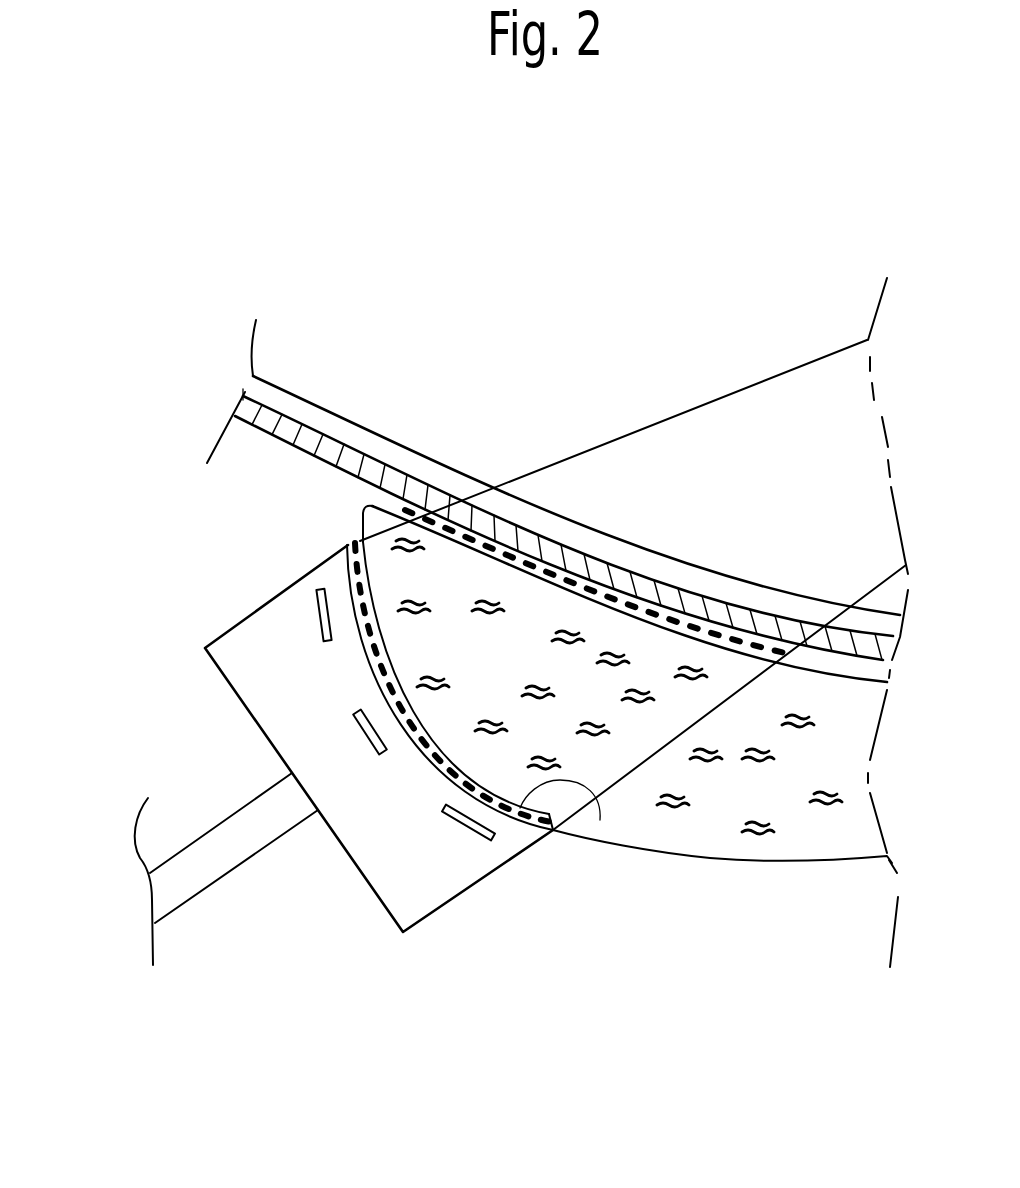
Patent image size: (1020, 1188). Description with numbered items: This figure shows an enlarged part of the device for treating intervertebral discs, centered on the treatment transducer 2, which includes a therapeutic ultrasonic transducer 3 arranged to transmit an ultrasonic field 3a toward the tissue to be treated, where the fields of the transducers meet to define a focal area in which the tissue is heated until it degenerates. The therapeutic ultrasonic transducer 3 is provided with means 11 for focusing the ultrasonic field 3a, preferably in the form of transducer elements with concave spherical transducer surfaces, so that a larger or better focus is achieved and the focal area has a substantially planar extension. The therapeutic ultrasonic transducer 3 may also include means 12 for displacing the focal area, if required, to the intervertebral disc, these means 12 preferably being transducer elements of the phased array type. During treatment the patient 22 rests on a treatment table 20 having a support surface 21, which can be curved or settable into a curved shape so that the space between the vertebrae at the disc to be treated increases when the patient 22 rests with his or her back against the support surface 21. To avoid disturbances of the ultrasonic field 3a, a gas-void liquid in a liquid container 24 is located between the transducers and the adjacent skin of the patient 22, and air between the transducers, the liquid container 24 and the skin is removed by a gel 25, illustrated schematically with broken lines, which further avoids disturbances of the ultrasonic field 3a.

The treatment transducer 2 is at (213, 564).
The therapeutic ultrasonic transducer 3 is at (257, 697).
The ultrasonic field 3a is at (640, 427).
The means for focusing 11 is at (600, 820).
The means for displacing the focal area 12 is at (463, 830).
The treatment table 20 is at (283, 480).
The support surface 21 is at (314, 455).
The patient 22 is at (292, 393).
The liquid container 24 is at (703, 852).
The gel 25 is at (374, 673).